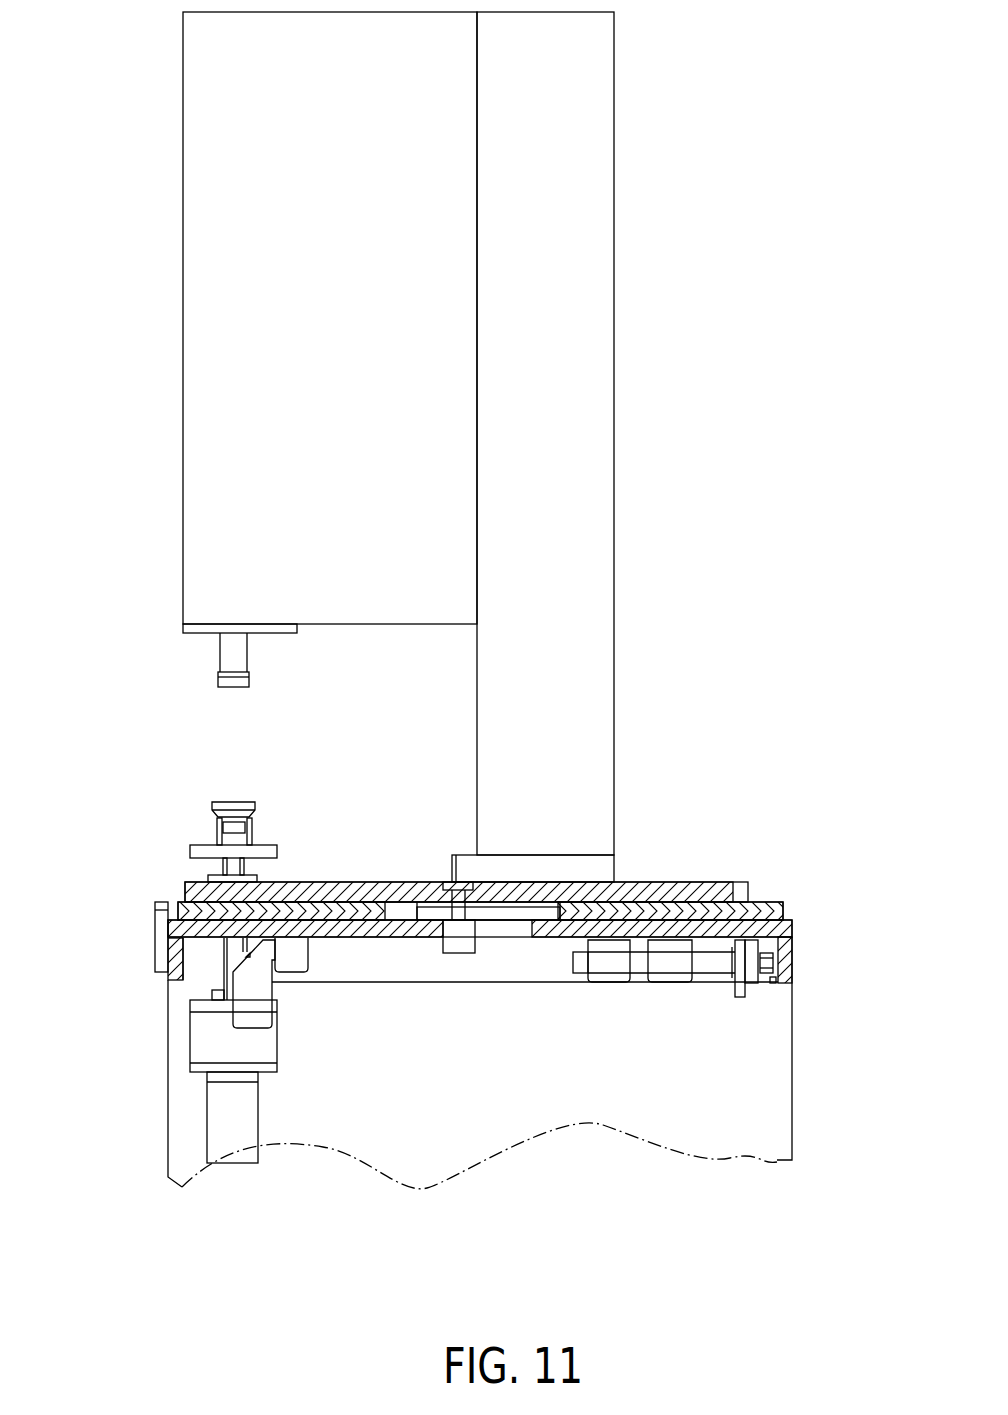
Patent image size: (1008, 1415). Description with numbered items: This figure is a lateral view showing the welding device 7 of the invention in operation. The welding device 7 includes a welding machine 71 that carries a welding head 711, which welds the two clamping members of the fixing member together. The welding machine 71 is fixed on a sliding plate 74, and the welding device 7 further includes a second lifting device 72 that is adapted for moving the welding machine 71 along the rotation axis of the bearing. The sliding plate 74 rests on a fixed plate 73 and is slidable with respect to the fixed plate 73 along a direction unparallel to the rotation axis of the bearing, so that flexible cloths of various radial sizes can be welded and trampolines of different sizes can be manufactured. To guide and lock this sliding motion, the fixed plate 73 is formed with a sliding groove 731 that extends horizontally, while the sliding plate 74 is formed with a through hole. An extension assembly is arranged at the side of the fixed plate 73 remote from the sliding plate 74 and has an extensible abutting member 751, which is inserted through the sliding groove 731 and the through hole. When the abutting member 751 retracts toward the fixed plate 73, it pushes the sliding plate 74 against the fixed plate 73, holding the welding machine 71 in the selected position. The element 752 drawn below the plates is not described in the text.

The welding device 7 is at (652, 180).
The welding machine 71 is at (245, 359).
The welding head 711 is at (228, 680).
The second lifting device 72 is at (228, 1090).
The fixed plate 73 is at (757, 907).
The sliding groove 731 is at (435, 913).
The sliding plate 74 is at (692, 888).
The abutting member 751 is at (450, 883).
The guide block 752 is at (463, 937).